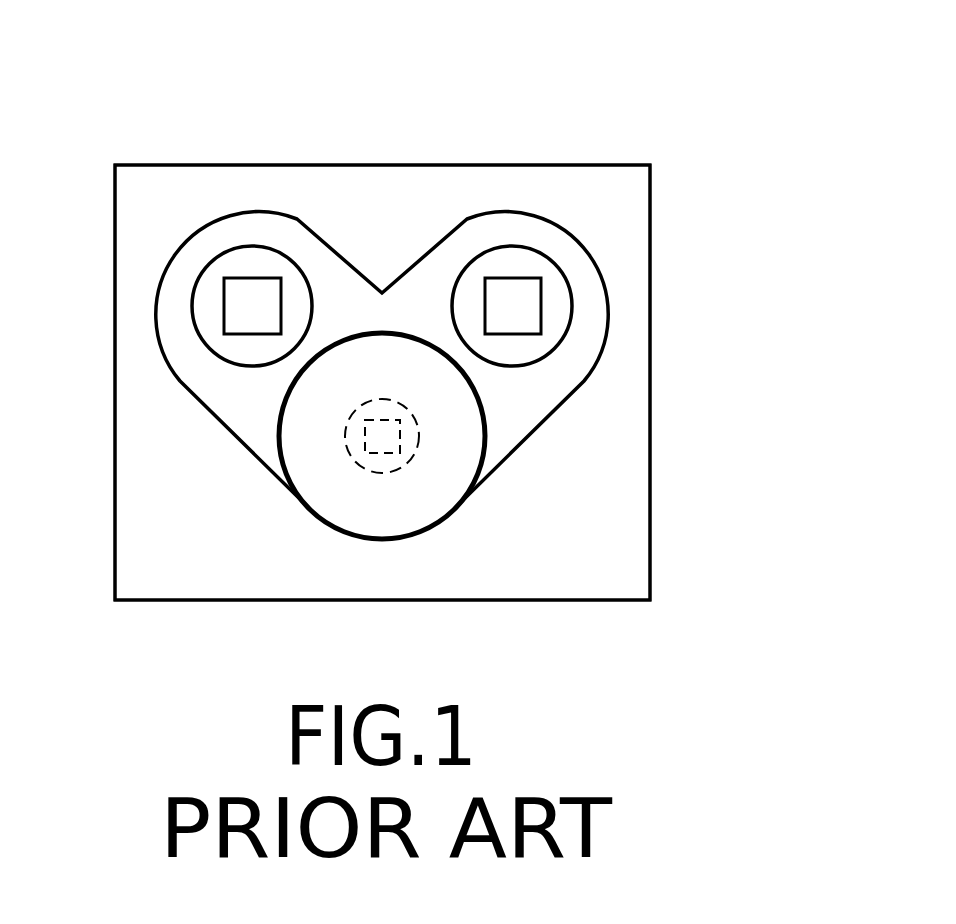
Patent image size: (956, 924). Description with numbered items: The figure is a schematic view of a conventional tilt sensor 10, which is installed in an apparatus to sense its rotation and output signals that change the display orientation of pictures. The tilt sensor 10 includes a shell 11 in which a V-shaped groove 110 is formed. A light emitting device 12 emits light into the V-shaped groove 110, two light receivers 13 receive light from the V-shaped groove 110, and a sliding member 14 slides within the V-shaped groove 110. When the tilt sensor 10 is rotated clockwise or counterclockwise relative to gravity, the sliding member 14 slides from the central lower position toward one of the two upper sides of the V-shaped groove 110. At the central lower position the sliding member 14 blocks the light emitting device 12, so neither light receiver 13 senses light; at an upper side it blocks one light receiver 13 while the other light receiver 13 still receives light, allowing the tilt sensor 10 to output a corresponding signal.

The tilt sensor 10 is at (360, 36).
The shell 11 is at (632, 457).
The V-shaped groove 110 is at (585, 232).
The light emitting device 12 is at (378, 453).
The light receiver 13 is at (254, 293).
The sliding member 14 is at (283, 437).